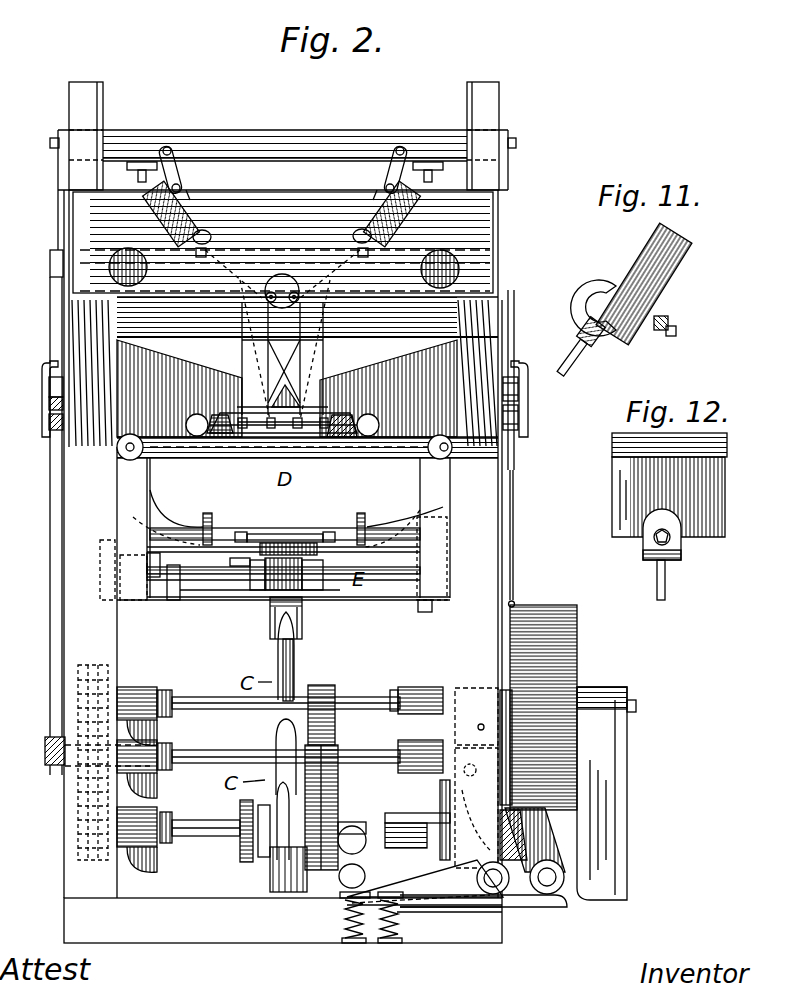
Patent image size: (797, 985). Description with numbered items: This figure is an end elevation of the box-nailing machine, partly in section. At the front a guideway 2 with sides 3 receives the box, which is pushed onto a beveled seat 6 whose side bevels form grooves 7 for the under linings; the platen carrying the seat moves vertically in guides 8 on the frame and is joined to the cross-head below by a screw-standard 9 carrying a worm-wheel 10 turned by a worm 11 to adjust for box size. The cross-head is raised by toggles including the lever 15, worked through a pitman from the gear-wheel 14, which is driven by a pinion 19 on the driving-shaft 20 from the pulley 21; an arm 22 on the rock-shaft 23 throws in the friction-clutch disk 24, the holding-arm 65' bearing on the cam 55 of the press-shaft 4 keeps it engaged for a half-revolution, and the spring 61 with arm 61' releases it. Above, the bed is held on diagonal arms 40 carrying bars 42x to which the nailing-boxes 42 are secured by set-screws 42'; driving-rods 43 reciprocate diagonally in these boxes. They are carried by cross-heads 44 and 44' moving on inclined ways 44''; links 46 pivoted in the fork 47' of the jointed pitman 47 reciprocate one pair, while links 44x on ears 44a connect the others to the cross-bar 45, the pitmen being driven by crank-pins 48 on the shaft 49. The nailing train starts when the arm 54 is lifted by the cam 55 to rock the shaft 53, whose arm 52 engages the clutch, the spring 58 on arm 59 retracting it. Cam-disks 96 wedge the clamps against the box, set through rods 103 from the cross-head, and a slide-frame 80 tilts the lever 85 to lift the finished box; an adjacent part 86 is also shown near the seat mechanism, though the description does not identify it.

The cross-bar 45 is at (318, 124).
The jointed pitman 47 is at (283, 512).
The fork of jointed pitman 47' is at (283, 399).
The links 46 is at (55, 318).
The crank-pins 48 is at (46, 750).
The cross-heads 44 is at (282, 322).
The links 44x is at (178, 175).
The cross-heads 44' is at (282, 214).
The inclined ways 44'' is at (274, 230).
The ears 44a is at (387, 185).
The driving-rods 43 is at (265, 372).
The diagonal arms 40 is at (307, 388).
The nailing-boxes 42 is at (282, 451).
The set-screws 42' is at (283, 435).
The bars 42x is at (350, 417).
The cam-disks 96 is at (125, 460).
The guides 8 is at (132, 502).
The rods 103 is at (133, 517).
The sides 3 is at (208, 525).
The grooves 7 is at (220, 528).
The guideway 2 is at (270, 532).
The seat 6 is at (300, 538).
The lever 85 is at (370, 533).
The slide-frame 80 is at (240, 552).
The lever 86 is at (353, 560).
The worm 11 is at (253, 573).
The worm-wheel 10 is at (313, 583).
The screw-standard 9 is at (302, 644).
The driving-shaft 20 is at (375, 703).
The shaft 49 is at (230, 750).
The lever 15 is at (257, 790).
The pinion 19 is at (328, 692).
The gear-wheel 14 is at (335, 753).
The press-shaft 4 is at (342, 823).
The cam 55 is at (447, 852).
The arm 52 is at (542, 847).
The pulley 21 is at (567, 660).
The friction-clutch disk 24 is at (513, 606).
The arm 22 is at (540, 820).
The rock-shaft 53 is at (550, 884).
The arm 54 is at (523, 895).
The rock-shaft 23 is at (503, 902).
The holding-arm 65' is at (425, 900).
The spring 61 is at (346, 919).
The spring 58 is at (384, 940).
The arm 61' is at (424, 925).
The arm 59 is at (473, 912).